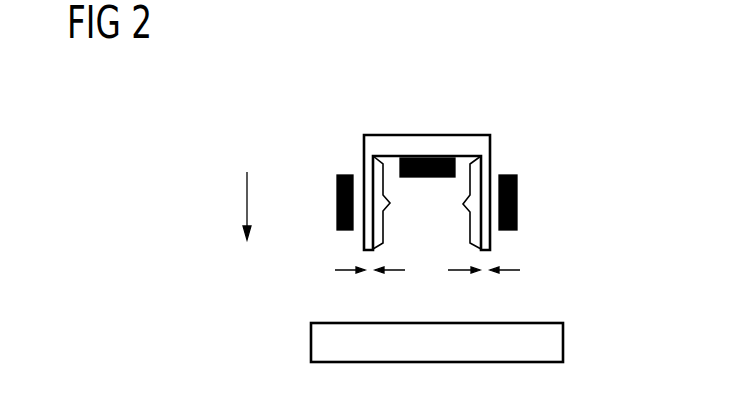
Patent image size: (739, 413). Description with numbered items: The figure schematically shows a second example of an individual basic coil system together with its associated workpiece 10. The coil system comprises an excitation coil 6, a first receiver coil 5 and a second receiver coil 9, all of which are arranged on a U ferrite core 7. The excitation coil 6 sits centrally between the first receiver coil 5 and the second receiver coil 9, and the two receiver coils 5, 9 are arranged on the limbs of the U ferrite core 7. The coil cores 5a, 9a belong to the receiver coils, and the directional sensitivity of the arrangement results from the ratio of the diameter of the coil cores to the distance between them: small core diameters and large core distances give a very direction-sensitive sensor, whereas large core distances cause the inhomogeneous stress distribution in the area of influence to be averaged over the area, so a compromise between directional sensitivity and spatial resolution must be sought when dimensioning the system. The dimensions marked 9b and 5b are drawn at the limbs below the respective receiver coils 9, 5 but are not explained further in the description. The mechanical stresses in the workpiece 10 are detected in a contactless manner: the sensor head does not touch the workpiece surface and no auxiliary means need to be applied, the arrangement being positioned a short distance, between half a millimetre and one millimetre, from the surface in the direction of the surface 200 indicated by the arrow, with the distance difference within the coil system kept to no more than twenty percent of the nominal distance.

The U ferrite core 7 is at (432, 135).
The coil core 9a is at (395, 202).
The coil core 5a is at (456, 202).
The excitation coil 6 is at (430, 177).
The second receiver coil 9 is at (336, 204).
The first receiver coil 5 is at (517, 206).
The direction of the surface 200 is at (246, 196).
The left gap width 9b is at (370, 285).
The right gap width 5b is at (484, 285).
The workpiece 10 is at (311, 335).